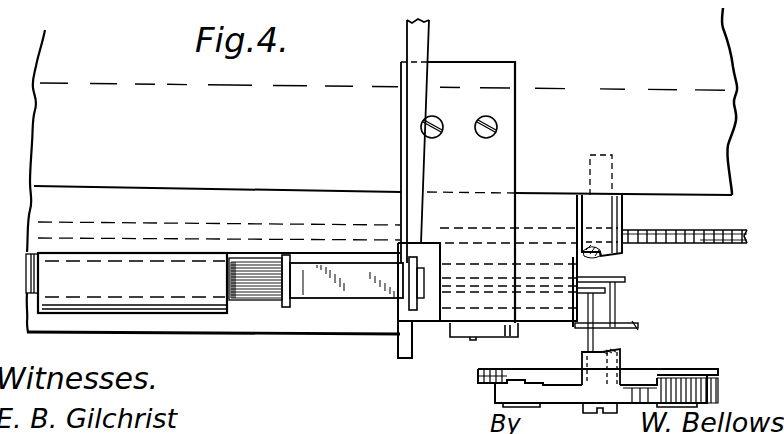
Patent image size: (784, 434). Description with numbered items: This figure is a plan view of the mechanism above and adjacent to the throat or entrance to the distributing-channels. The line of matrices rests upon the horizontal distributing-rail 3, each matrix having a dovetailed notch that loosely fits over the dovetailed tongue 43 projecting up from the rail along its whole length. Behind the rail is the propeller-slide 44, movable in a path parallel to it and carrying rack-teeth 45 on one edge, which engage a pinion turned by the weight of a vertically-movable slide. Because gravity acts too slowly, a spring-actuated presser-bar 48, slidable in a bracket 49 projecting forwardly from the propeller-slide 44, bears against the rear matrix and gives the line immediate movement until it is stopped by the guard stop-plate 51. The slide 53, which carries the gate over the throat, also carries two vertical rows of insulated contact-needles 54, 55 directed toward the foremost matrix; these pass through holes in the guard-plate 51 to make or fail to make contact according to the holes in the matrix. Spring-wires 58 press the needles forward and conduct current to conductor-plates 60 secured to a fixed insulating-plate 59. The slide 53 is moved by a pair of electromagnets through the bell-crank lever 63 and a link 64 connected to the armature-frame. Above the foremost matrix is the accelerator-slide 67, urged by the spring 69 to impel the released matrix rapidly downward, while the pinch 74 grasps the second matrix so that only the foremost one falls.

The distributing-rail 3 is at (350, 281).
The dovetailed tongue 43 is at (368, 300).
The propeller-slide 44 is at (692, 244).
The rack-teeth 45 is at (733, 245).
The spring-actuated presser-bar 48 is at (273, 294).
The bracket 49 is at (126, 283).
The guard stop-plate 51 is at (424, 280).
The slide 53 is at (572, 265).
The contact-needles 54 is at (625, 280).
The contact-needles 55 is at (628, 256).
The spring-wires 58 is at (592, 315).
The insulating-plate 59 is at (551, 396).
The conductor-plates 60 is at (662, 376).
The bell-crank lever 63 is at (498, 340).
The link 64 is at (634, 327).
The accelerator-slide 67 is at (417, 257).
The spring 69 is at (420, 172).
The pinch 74 is at (416, 355).